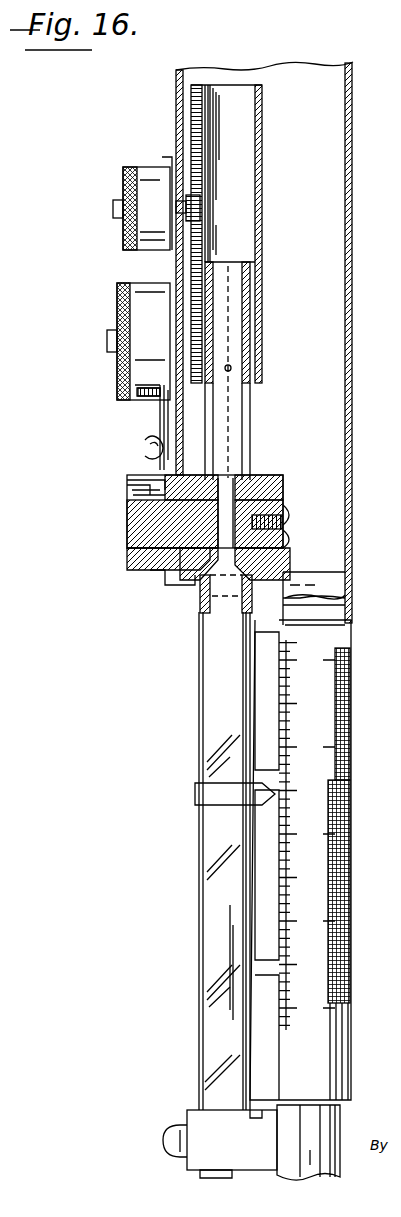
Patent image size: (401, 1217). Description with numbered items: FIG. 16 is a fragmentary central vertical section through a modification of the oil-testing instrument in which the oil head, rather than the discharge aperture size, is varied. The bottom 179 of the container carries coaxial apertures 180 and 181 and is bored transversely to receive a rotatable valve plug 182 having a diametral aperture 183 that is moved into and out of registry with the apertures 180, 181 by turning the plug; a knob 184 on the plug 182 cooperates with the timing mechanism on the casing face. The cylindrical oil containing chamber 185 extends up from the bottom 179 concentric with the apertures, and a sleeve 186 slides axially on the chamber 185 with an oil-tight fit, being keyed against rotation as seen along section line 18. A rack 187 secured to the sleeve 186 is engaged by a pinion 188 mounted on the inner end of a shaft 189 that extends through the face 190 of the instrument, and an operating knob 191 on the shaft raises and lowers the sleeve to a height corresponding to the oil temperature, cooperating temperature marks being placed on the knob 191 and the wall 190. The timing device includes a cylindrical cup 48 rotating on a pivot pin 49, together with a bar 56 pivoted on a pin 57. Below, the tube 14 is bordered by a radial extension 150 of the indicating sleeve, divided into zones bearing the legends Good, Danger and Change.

The tube 14 is at (206, 690).
The section line 18- 18 is at (103, 162).
The cylindrical cup 48 is at (148, 283).
The pivot pin 49 is at (107, 347).
The bar 56 is at (160, 412).
The pivot pin 57 is at (150, 450).
The radial extension 150 is at (272, 697).
The bottom 179 is at (318, 592).
The aperture 180 is at (262, 550).
The aperture 181 is at (245, 487).
The rotatable valve plug 182 is at (140, 523).
The aperture 183 is at (233, 509).
The knob 184 is at (127, 481).
The oil containing chamber 185 is at (250, 420).
The sleeve 186 is at (262, 257).
The rack 187 is at (196, 143).
The pinion 188 is at (206, 194).
The shaft 189 is at (203, 212).
The face 190 is at (176, 114).
The operating knob 191 is at (143, 221).